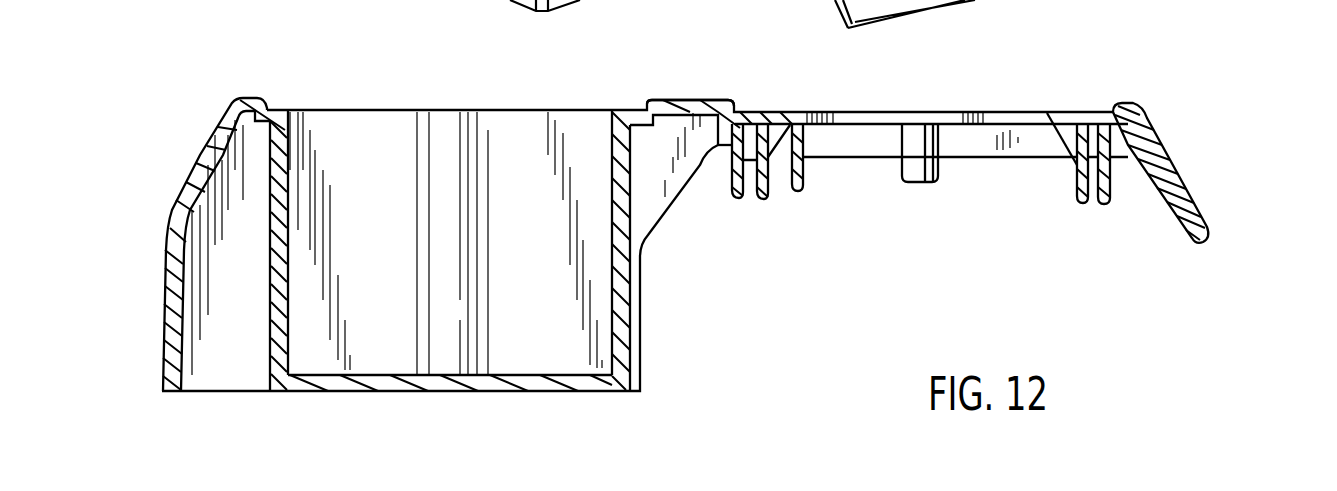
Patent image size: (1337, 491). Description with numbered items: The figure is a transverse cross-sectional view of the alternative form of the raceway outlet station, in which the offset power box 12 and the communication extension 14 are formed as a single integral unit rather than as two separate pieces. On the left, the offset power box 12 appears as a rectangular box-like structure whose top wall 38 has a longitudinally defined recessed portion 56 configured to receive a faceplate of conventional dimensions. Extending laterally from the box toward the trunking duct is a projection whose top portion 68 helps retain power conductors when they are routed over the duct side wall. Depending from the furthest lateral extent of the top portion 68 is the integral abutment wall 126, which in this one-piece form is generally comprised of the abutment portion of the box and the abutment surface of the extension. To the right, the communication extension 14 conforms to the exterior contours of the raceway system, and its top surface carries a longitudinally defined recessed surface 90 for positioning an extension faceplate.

The offset power box 12 is at (347, 93).
The top wall 38 is at (246, 98).
The recessed portion 56 is at (630, 110).
The top portion 68 is at (690, 98).
The integral abutment wall 126 is at (727, 127).
The recessed surface 90 is at (1060, 112).
The communication extension 14 is at (1183, 145).